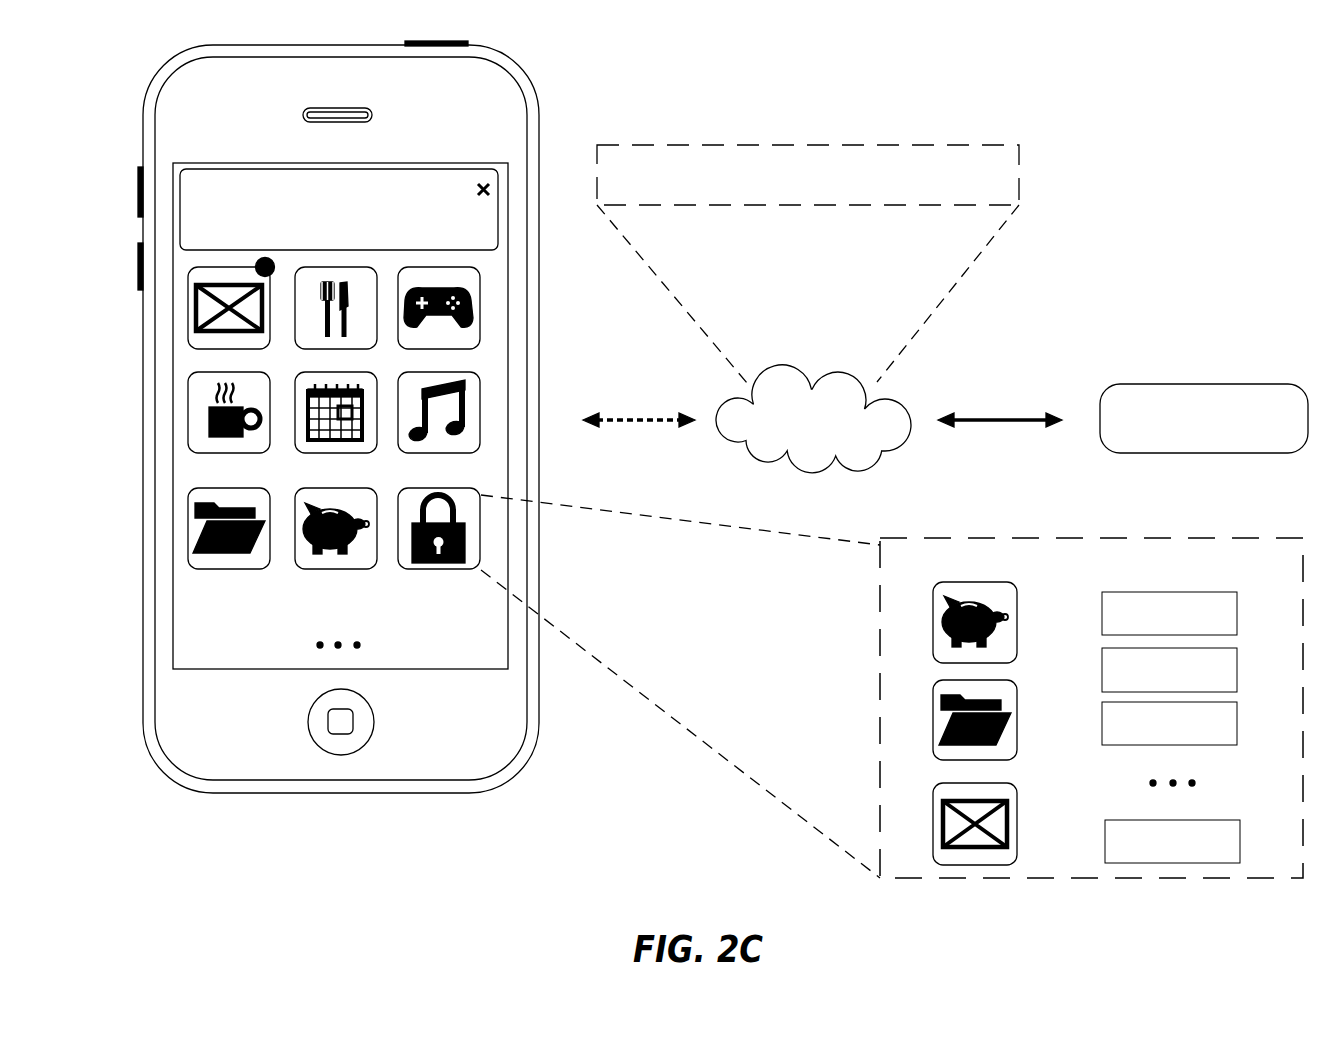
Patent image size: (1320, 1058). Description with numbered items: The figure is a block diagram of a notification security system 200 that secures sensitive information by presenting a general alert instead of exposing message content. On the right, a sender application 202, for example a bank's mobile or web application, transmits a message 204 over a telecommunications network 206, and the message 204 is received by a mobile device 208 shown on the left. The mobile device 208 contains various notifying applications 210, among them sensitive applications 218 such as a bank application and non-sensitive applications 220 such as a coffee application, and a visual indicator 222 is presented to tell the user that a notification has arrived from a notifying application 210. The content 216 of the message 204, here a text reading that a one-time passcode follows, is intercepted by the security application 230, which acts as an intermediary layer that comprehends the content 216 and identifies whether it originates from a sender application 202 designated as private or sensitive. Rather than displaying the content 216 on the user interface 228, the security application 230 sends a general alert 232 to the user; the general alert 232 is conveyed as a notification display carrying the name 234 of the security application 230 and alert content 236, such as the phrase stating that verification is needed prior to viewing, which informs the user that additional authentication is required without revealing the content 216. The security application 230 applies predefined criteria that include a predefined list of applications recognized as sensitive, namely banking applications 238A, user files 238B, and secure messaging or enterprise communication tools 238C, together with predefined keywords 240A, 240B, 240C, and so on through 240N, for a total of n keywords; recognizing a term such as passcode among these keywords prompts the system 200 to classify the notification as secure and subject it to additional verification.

The notification security system 200 is at (1108, 107).
The sender application 202 is at (1259, 384).
The message 204 is at (902, 390).
The telecommunications network 206 is at (635, 413).
The mobile device 208 is at (338, 435).
The notifying application 210 is at (192, 304).
The content 216 is at (710, 142).
The sensitive application 218 is at (350, 569).
The non-sensitive application 220 is at (192, 417).
The visual indicator 222 is at (257, 264).
The user interface 228 is at (203, 643).
The security application 230 is at (452, 569).
The general alert 232 is at (365, 168).
The name of the security application 234 is at (262, 185).
The alert content 236 is at (423, 223).
The banking application 238A is at (1017, 622).
The user files 238B is at (1017, 725).
The secure messaging application 238C is at (1017, 830).
The predefined keyword 240A is at (1237, 600).
The predefined keyword 240B is at (1237, 660).
The predefined keyword 240C is at (1237, 715).
The predefined keyword 240N is at (1240, 835).